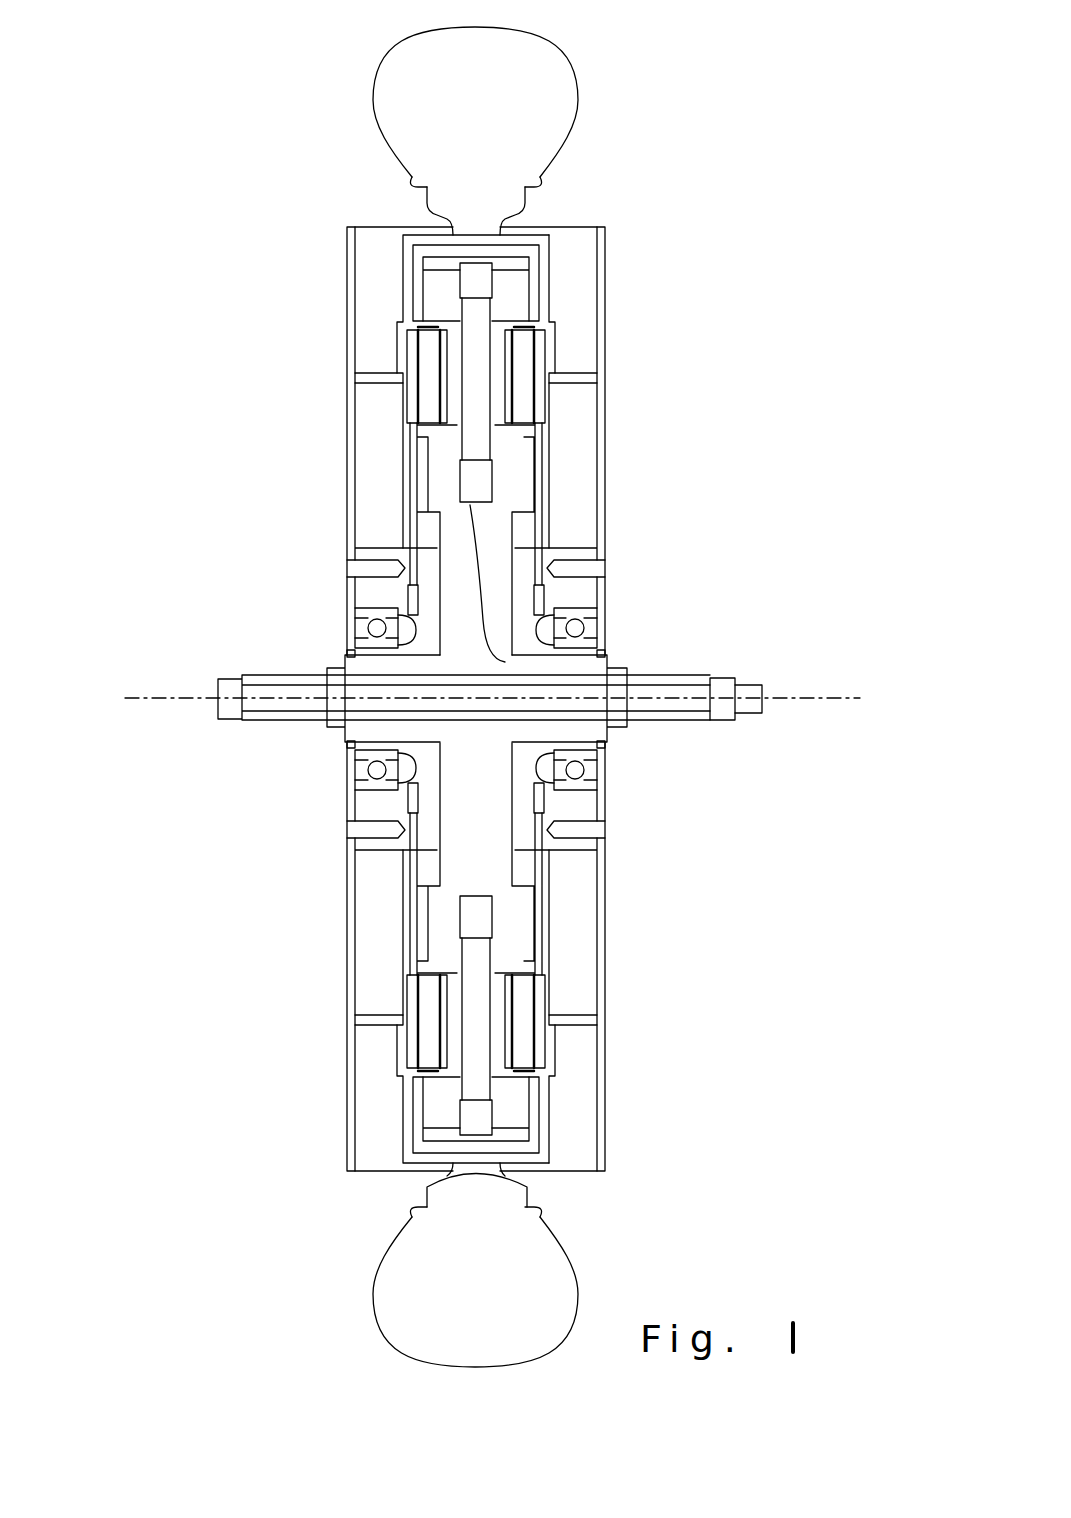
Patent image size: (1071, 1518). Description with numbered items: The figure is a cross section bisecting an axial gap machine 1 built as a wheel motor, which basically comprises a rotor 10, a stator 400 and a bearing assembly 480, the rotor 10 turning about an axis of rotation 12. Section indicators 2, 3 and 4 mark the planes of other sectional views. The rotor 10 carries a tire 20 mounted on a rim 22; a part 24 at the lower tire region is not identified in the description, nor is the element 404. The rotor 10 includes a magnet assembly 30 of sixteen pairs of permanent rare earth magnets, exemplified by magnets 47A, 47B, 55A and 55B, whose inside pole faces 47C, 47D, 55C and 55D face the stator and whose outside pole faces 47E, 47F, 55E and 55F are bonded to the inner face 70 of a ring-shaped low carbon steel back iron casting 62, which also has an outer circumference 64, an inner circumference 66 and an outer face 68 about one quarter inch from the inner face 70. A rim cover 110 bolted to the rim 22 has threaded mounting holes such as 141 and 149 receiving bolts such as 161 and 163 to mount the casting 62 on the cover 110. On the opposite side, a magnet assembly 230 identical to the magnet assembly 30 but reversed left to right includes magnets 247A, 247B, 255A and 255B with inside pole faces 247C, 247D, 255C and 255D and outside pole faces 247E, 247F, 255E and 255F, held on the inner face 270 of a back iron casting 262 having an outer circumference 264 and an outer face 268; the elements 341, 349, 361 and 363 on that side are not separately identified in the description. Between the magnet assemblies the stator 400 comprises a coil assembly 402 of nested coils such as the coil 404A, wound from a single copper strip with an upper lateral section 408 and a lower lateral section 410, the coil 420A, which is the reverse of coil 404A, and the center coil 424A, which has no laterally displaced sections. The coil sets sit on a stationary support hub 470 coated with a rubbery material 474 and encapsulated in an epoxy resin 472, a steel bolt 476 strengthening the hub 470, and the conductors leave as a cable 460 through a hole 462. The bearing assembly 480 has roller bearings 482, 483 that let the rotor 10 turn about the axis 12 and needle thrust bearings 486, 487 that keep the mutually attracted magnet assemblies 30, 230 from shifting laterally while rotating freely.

The axial gap machine 1 is at (765, 98).
The section line 2 is at (440, 290).
The section line 3 is at (512, 292).
The section line 4 is at (477, 210).
The rotor 10 is at (612, 234).
The axis of rotation 12 is at (770, 697).
The tire 20 is at (578, 86).
The rim 22 is at (546, 200).
The lower dome 24 is at (405, 1218).
The magnet assembly 30 is at (445, 460).
The permanent rare earth magnet 47A is at (390, 1085).
The permanent rare earth magnet 47B is at (404, 990).
The inside pole face 47C is at (418, 995).
The inside pole face 47D is at (437, 1030).
The outside pole face 47E is at (395, 977).
The outside pole face 47F is at (432, 1053).
The permanent rare earth magnet 55A is at (410, 355).
The permanent rare earth magnet 55B is at (435, 430).
The inside pole face 55C is at (425, 320).
The inside pole face 55D is at (415, 420).
The outside pole face 55E is at (418, 328).
The outside pole face 55F is at (420, 405).
The back iron casting 62 is at (425, 975).
The outer circumference 64 is at (407, 330).
The inner circumference 66 is at (428, 480).
The outer face 68 is at (432, 437).
The inner face 70 is at (410, 400).
The rim cover 110 is at (424, 252).
The threaded mounting hole 141 is at (362, 378).
The threaded mounting hole 149 is at (347, 1027).
The bolt 161 is at (397, 378).
The bolt 163 is at (357, 1015).
The magnet assembly 230 is at (550, 432).
The permanent magnet 247A is at (555, 1098).
The permanent magnet 247B is at (549, 990).
The inside pole face 247C is at (555, 1045).
The inside pole face 247D is at (550, 1058).
The outside pole face 247E is at (555, 1022).
The outside pole face 247F is at (547, 1075).
The permanent magnet 255A is at (552, 350).
The permanent magnet 255B is at (548, 407).
The inside pole face 255C is at (553, 318).
The inside pole face 255D is at (550, 415).
The outside pole face 255E is at (560, 340).
The outside pole face 255F is at (547, 395).
The back iron casting 262 is at (556, 1000).
The outer circumference 264 is at (552, 985).
The outer face 268 is at (560, 358).
The inner face 270 is at (556, 365).
The passage 341 is at (597, 378).
The passage 349 is at (607, 1027).
The port 361 is at (597, 386).
The port 363 is at (600, 1022).
The stator 400 is at (725, 676).
The coil assembly 402 is at (430, 250).
The seal 404 is at (467, 230).
The coil 404A is at (468, 505).
The upper lateral section 408 is at (406, 250).
The lower lateral section 410 is at (412, 495).
The coil 420A is at (548, 270).
The center coil 424A is at (558, 235).
The cable 460 is at (604, 670).
The hole 462 is at (612, 668).
The stationary support hub 470 is at (430, 545).
The epoxy resin 472 is at (448, 258).
The rubbery material 474 is at (398, 568).
The steel bolt 476 is at (747, 714).
The bearing assembly 480 is at (300, 627).
The roller bearing 482 is at (335, 632).
The roller bearing 483 is at (614, 613).
The needle thrust bearing 486 is at (409, 600).
The needle thrust bearing 487 is at (546, 592).